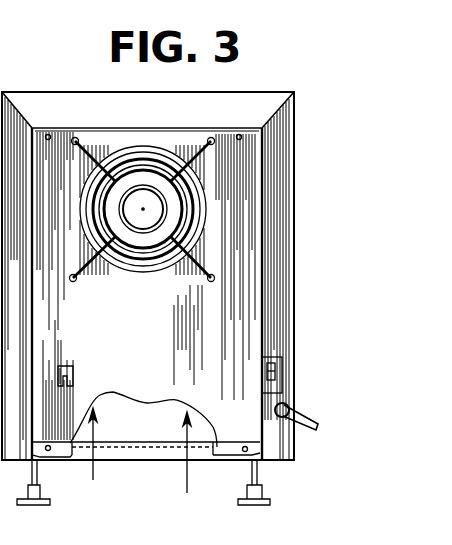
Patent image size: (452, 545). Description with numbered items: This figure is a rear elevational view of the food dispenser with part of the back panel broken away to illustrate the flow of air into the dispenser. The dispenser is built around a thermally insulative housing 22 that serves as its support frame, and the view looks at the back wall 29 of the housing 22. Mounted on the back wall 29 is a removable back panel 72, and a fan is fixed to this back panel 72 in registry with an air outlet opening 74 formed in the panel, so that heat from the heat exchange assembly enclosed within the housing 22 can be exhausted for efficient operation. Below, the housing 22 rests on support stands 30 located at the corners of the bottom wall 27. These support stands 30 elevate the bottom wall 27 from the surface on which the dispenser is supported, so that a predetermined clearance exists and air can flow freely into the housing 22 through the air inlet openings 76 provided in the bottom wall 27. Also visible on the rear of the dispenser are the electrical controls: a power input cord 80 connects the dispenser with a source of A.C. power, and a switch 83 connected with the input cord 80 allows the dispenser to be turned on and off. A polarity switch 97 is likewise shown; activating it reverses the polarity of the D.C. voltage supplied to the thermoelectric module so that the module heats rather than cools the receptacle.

The thermally insulative housing 22 is at (293, 213).
The back wall 29 is at (88, 107).
The removable back panel 72 is at (238, 322).
The air outlet opening 74 is at (165, 165).
The polarity switch 97 is at (75, 367).
The switch 83 is at (283, 377).
The power input cord 80 is at (290, 418).
The air inlet openings 76 is at (197, 447).
The bottom wall 27 is at (203, 447).
The support stands 30 is at (37, 470).